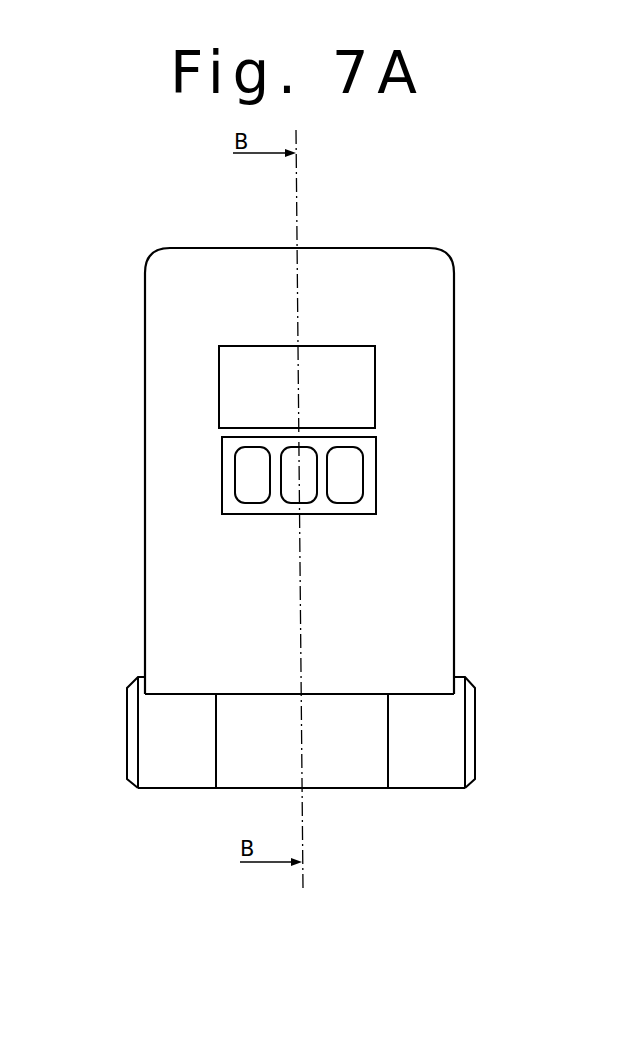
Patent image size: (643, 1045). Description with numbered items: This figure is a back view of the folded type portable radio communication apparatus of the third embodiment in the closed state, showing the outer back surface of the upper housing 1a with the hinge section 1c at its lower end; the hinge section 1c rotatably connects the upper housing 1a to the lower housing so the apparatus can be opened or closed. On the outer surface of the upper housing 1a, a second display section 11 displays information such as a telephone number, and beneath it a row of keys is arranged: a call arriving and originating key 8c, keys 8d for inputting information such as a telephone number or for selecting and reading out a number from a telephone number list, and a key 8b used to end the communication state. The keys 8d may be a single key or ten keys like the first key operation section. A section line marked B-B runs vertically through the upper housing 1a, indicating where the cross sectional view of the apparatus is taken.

The upper housing 1a is at (388, 258).
The hinge section 1c is at (475, 743).
The second display section 11 is at (360, 365).
The key 8b is at (352, 477).
The call arriving and originating key 8c is at (253, 477).
The keys 8d is at (310, 490).